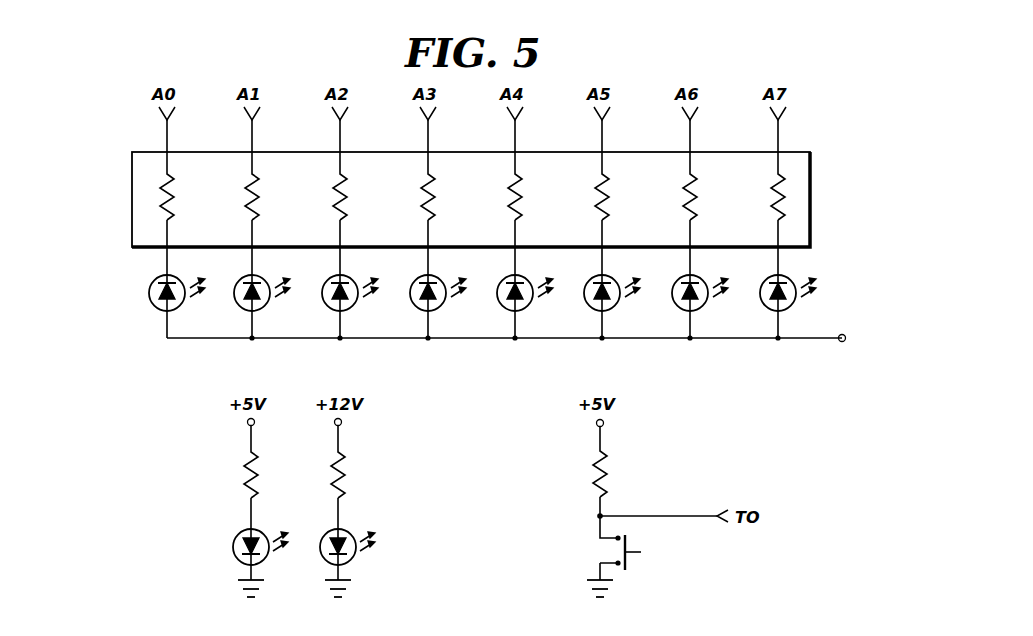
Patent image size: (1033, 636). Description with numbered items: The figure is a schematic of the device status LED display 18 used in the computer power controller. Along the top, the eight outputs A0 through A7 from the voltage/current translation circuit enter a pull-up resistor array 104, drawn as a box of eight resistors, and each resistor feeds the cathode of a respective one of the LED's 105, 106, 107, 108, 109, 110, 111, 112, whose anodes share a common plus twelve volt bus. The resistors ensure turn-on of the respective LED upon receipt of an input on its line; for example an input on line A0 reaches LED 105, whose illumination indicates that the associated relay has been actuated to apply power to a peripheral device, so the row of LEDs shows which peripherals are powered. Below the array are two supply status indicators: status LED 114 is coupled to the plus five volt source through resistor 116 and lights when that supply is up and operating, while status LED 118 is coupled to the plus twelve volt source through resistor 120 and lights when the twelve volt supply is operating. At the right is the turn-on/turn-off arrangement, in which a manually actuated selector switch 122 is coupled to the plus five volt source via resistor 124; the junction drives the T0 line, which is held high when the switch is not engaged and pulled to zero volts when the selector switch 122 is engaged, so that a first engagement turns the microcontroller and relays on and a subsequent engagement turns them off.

The device status LED display 18 is at (760, 402).
The pull-up resistor array 104 is at (132, 172).
The LED 105 is at (155, 306).
The LED 106 is at (240, 306).
The LED 107 is at (328, 306).
The LED 108 is at (416, 306).
The LED 109 is at (503, 306).
The LED 110 is at (590, 306).
The LED 111 is at (678, 306).
The LED 112 is at (766, 306).
The status LED 114 is at (233, 541).
The resistor 116 is at (246, 470).
The status LED 118 is at (357, 552).
The resistor 120 is at (350, 467).
The selector switch 122 is at (598, 548).
The resistor 124 is at (596, 470).